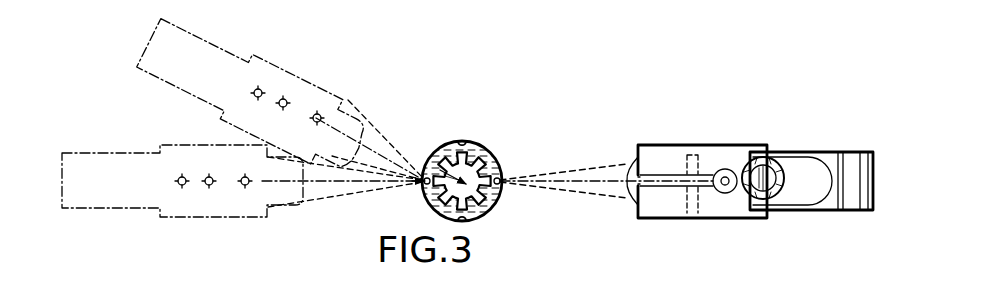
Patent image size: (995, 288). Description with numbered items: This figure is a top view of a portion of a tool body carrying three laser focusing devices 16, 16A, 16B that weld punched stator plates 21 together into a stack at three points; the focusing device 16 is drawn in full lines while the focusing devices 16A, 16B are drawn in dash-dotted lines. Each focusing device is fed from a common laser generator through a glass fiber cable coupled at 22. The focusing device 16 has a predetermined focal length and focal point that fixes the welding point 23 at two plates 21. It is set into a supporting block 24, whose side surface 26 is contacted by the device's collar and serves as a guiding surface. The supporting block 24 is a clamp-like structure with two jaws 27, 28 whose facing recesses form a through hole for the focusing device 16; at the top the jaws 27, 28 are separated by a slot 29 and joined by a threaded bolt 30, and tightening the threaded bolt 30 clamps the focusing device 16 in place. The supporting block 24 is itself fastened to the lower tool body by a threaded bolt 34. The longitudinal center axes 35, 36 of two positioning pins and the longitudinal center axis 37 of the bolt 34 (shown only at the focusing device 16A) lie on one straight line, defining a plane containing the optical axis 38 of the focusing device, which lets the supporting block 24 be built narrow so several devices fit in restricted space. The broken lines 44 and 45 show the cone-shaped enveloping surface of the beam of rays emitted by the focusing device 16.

The focusing device 16 is at (808, 183).
The focusing device 16A is at (244, 91).
The focusing device 16B is at (131, 151).
The stator plates 21 is at (478, 145).
The glass fiber cable coupling 22 is at (770, 168).
The welding point 23 is at (501, 184).
The supporting block 24 is at (687, 182).
The side surface 26 is at (757, 216).
The jaw 27 is at (669, 204).
The jaw 28 is at (673, 153).
The slot 29 is at (659, 179).
The threaded bolt 30 is at (701, 152).
The threaded bolt 34 is at (726, 192).
The longitudinal center axis 35 is at (258, 88).
The longitudinal center axis 36 is at (319, 113).
The longitudinal center axis 37 is at (285, 98).
The optical axis 38 is at (398, 150).
The broken line of enveloping surface 44 is at (567, 172).
The broken line of enveloping surface 45 is at (565, 191).